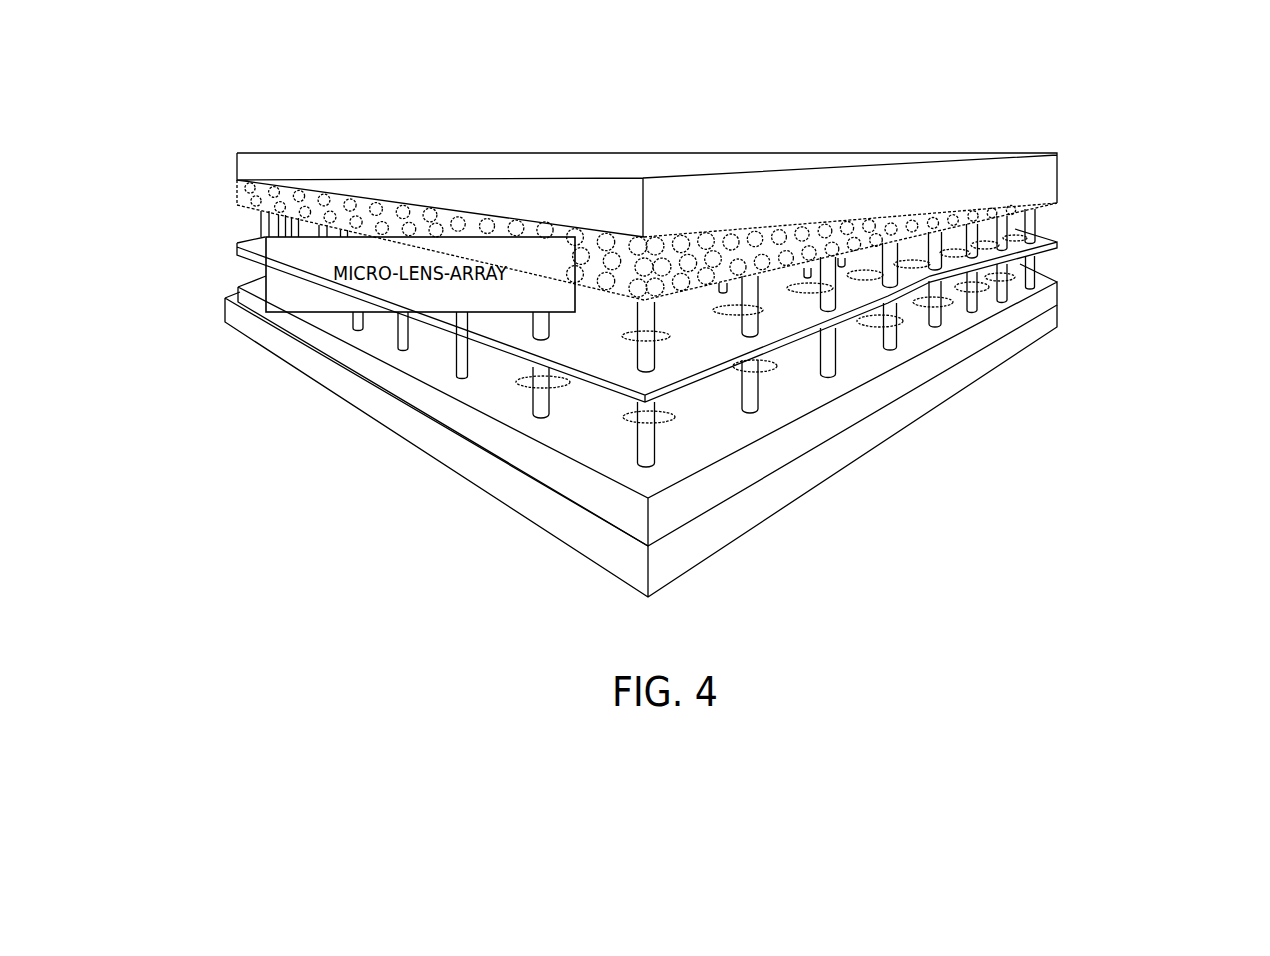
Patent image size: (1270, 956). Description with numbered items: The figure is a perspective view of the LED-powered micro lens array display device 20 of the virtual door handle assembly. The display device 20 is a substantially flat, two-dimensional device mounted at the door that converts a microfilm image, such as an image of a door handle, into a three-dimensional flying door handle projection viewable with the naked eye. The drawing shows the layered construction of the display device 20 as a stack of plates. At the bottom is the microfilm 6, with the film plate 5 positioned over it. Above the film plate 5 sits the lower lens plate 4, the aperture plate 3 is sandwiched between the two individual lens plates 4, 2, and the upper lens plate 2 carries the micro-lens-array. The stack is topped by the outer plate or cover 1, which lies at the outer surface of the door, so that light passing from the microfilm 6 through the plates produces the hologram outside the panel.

The display device 20 is at (196, 183).
The plate (cover) 1 is at (875, 183).
The lens plate 2 is at (855, 208).
The aperture plate 3 is at (778, 310).
The lens plate 4 is at (778, 377).
The film plate 5 is at (875, 427).
The microfilm 6 is at (812, 487).